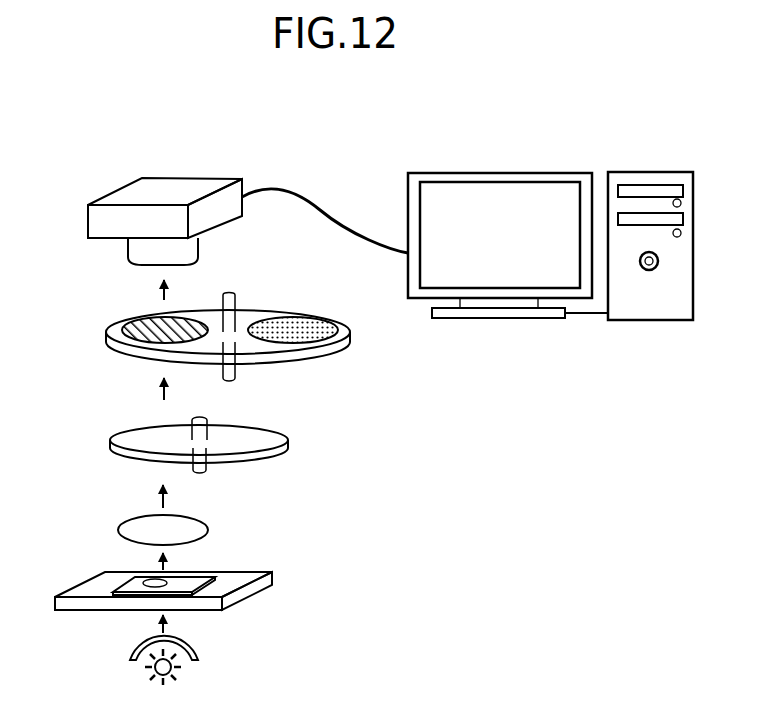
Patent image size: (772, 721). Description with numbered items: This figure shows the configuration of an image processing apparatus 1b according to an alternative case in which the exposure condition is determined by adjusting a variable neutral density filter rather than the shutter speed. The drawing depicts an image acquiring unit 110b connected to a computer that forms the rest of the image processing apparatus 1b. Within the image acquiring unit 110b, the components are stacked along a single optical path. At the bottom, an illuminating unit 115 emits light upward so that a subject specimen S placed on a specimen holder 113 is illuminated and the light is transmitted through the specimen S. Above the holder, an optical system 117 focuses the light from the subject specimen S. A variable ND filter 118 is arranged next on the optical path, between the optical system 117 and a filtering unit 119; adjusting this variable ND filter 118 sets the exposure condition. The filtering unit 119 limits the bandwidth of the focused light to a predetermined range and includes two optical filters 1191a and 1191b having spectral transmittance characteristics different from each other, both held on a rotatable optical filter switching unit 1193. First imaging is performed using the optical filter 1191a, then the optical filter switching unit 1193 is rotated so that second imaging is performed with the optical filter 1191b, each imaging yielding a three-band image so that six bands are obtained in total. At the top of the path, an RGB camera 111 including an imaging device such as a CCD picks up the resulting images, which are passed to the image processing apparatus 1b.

The image processing apparatus 1b is at (459, 119).
The image acquiring unit 110b is at (238, 156).
The RGB camera 111 is at (130, 186).
The specimen holder 113 is at (78, 592).
The illuminating unit 115 is at (125, 652).
The optical system 117 is at (138, 530).
The variable ND filter 118 is at (140, 440).
The filtering unit 119 is at (118, 308).
The optical filter 1191a is at (178, 322).
The optical filter 1191b is at (296, 322).
The optical filter switching unit 1193 is at (248, 342).
The subject specimen S is at (200, 580).